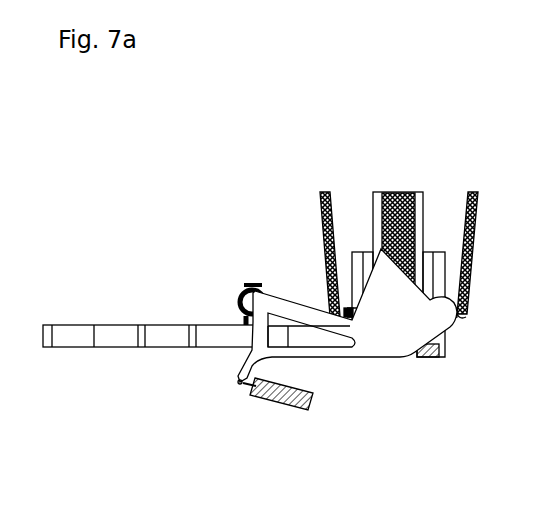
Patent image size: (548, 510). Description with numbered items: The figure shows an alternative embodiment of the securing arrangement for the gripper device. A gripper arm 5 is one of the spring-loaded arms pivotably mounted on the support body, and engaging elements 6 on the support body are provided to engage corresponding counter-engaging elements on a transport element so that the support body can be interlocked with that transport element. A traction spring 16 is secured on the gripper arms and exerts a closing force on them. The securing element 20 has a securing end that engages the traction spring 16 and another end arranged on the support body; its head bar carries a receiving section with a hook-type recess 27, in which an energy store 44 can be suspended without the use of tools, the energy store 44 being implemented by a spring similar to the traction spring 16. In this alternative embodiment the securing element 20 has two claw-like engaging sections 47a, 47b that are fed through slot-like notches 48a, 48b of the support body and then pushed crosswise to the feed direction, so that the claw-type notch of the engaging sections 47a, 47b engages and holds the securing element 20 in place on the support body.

The gripper arm 5 is at (175, 330).
The engaging element 6 is at (392, 312).
The traction spring 16 is at (242, 302).
The securing element 20 is at (345, 357).
The hook-type recess 27 is at (234, 387).
The energy store 44 is at (301, 410).
The claw-like engaging section 47a is at (373, 283).
The claw-like engaging section 47b is at (453, 318).
The slot-like notch 48a is at (352, 316).
The slot-like notch 48b is at (432, 318).